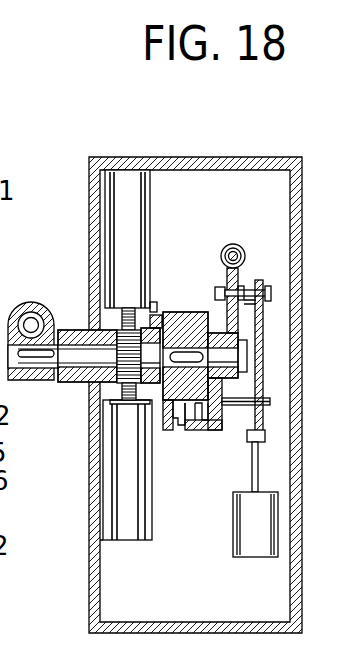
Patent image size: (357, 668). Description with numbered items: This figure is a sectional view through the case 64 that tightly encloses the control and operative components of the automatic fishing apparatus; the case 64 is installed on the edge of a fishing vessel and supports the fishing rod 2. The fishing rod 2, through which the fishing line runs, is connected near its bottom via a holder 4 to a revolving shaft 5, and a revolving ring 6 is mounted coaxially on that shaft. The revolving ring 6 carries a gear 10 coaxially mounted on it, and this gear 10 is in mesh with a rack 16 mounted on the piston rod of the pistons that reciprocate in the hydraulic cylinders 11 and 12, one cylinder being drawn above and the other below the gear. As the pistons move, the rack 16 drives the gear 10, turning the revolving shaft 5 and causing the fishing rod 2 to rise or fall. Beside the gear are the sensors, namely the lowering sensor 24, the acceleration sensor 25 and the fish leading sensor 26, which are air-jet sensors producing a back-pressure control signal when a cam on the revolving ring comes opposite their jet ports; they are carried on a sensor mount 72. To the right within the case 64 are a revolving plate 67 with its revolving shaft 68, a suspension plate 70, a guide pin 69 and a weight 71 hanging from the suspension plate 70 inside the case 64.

The fishing rod 2 is at (29, 305).
The holder 4 is at (32, 379).
The revolving shaft 5 is at (72, 320).
The revolving ring 6 is at (189, 310).
The gear 10 is at (128, 368).
The hydraulic cylinder 11 is at (110, 197).
The hydraulic cylinder 12 is at (120, 523).
The rack 16 is at (132, 398).
The lowering sensor 24 is at (170, 418).
The acceleration sensor 25 is at (197, 434).
The fish leading sensor 26 is at (208, 431).
The case 64 is at (302, 189).
The revolving plate 67 is at (241, 311).
The revolving shaft 68 is at (235, 244).
The guide pin 69 is at (268, 432).
The suspension plate 70 is at (262, 357).
The weight 71 is at (265, 543).
The sensor mount 72 is at (224, 388).